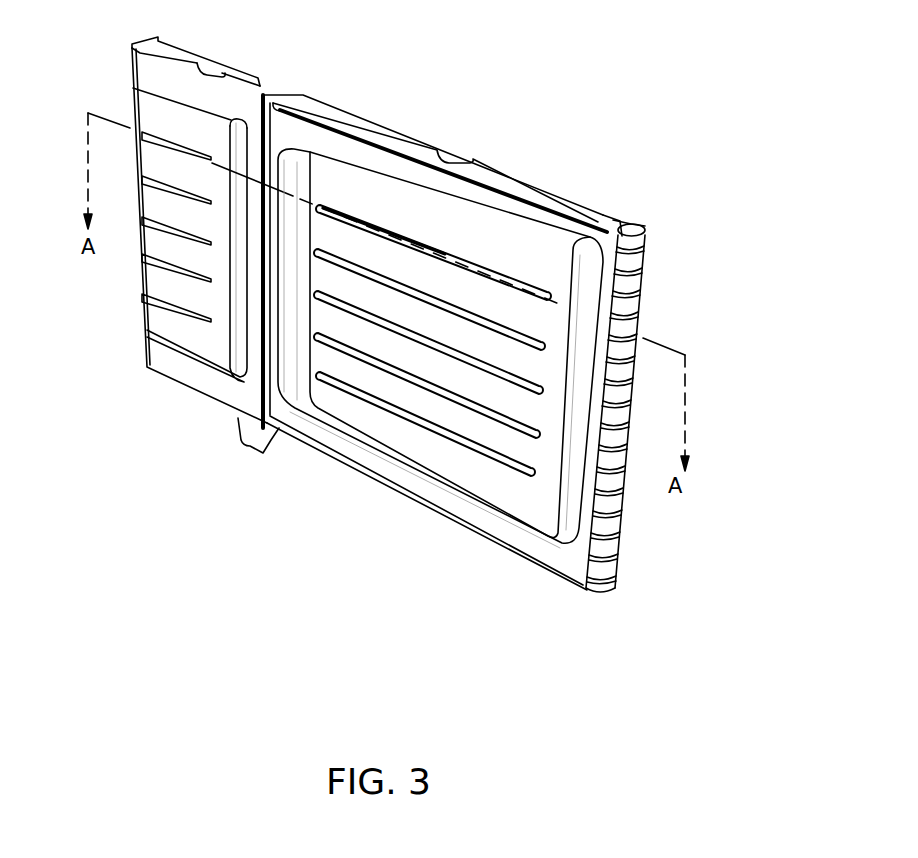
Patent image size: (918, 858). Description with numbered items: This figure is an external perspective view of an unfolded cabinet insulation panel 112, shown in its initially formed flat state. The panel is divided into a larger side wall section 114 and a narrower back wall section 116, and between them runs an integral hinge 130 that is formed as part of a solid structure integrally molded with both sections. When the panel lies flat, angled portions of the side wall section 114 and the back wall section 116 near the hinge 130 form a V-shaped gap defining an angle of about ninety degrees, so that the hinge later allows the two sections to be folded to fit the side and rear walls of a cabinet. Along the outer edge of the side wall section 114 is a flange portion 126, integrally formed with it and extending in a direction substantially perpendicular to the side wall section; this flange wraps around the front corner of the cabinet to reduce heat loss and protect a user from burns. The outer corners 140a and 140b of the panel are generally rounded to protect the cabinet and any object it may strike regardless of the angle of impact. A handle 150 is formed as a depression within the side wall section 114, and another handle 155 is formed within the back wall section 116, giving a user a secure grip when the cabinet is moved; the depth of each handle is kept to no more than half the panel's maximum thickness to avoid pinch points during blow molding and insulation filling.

The insulation panel 112 is at (302, 537).
The side wall section 114 is at (402, 493).
The back wall section 116 is at (167, 374).
The flange portion 126 is at (647, 226).
The integral hinge 130 is at (283, 71).
The outer corner 140a is at (602, 592).
The outer corner 140b is at (247, 443).
The handle 150 is at (297, 167).
The handle 155 is at (239, 134).